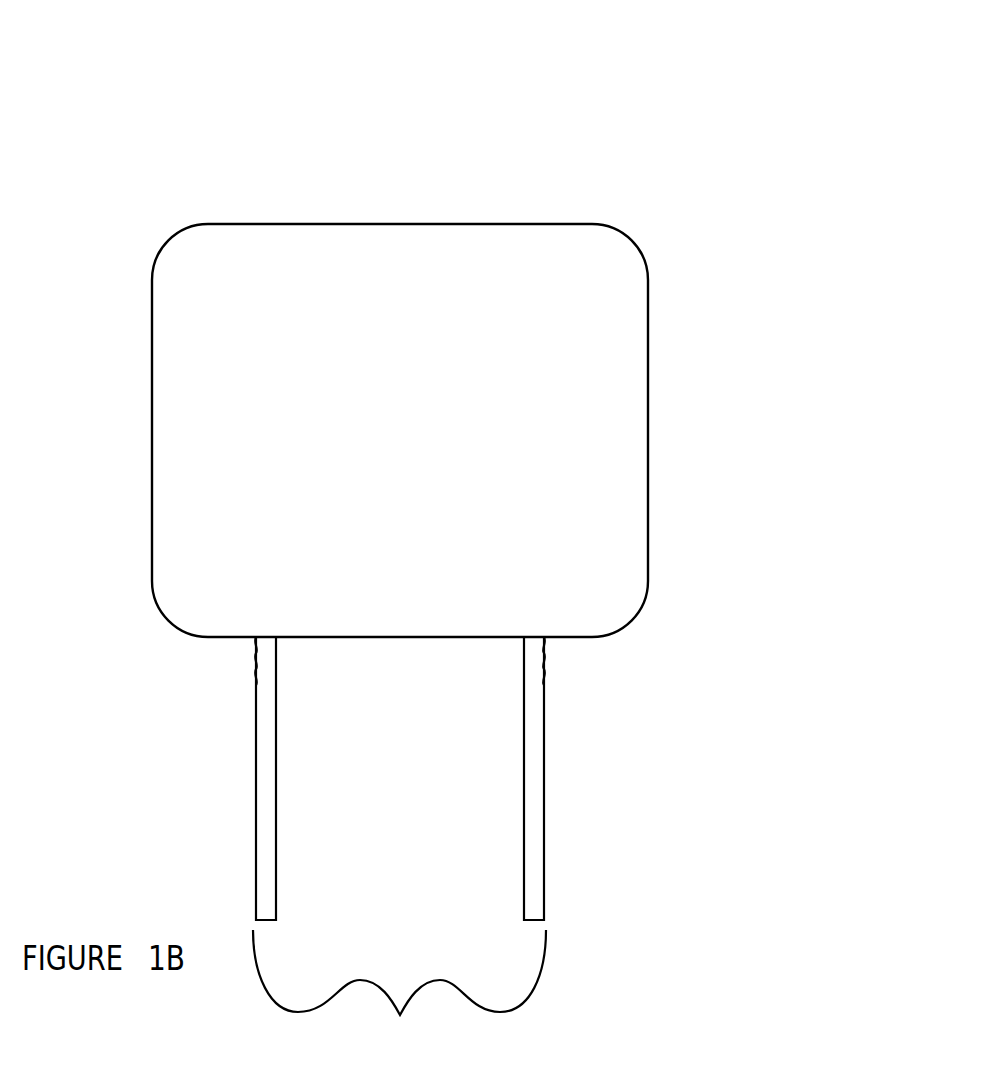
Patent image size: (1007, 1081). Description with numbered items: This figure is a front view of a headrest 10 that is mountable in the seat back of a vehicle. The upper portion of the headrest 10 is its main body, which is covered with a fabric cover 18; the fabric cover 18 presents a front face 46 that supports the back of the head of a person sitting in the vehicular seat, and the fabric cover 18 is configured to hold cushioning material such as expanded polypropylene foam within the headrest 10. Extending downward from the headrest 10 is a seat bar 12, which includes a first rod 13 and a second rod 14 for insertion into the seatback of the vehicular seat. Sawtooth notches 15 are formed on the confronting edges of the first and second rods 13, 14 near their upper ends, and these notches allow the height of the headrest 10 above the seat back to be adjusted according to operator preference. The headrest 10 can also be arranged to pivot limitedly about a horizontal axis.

The headrest 10 is at (152, 143).
The fabric cover 18 is at (612, 262).
The front face 46 is at (423, 445).
The first rod 13 is at (266, 858).
The second rod 14 is at (533, 858).
The sawtooth notches 15 is at (257, 662).
The seat bar 12 is at (399, 986).